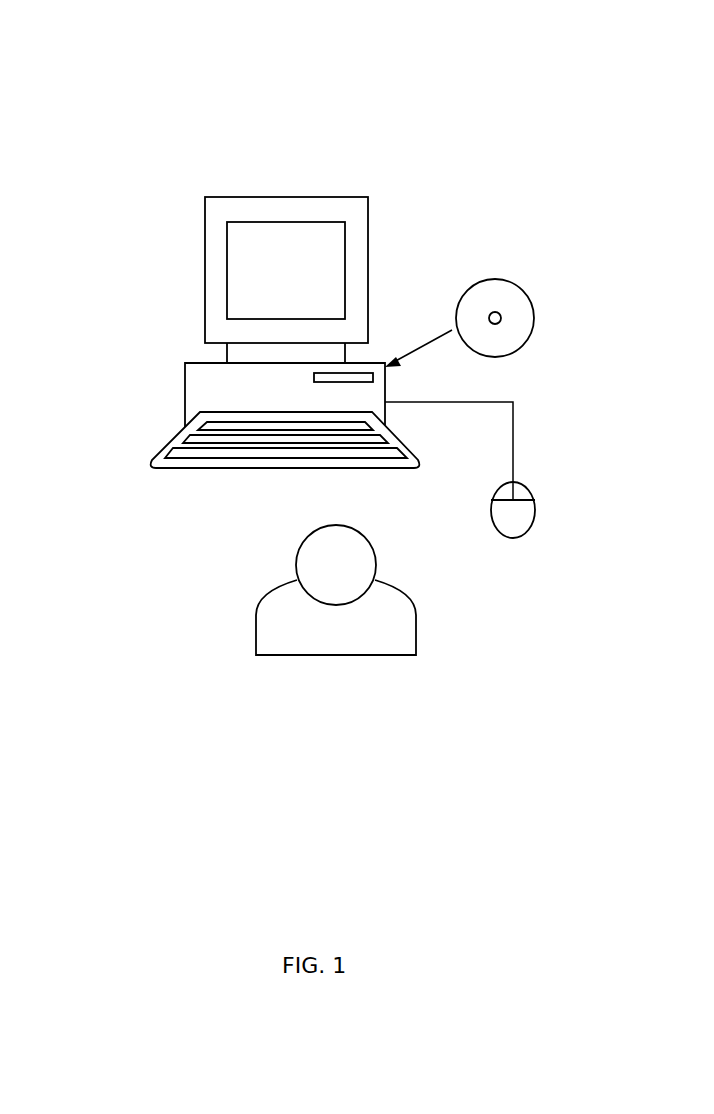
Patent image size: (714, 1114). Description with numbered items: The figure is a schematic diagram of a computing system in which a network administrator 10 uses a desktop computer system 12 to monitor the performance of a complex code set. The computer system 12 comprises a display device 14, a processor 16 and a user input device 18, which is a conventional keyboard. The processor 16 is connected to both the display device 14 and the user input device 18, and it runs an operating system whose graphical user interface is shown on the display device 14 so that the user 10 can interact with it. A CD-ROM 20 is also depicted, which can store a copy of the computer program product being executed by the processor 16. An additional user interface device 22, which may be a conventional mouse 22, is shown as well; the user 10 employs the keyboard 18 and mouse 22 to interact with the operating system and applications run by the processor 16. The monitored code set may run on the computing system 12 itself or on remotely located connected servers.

The network administrator 10 is at (255, 627).
The desktop computer system 12 is at (110, 88).
The display device 14 is at (368, 219).
The processor 16 is at (183, 382).
The user input device 18 is at (148, 458).
The CD-ROM 20 is at (533, 312).
The additional user interface device 22 is at (535, 513).